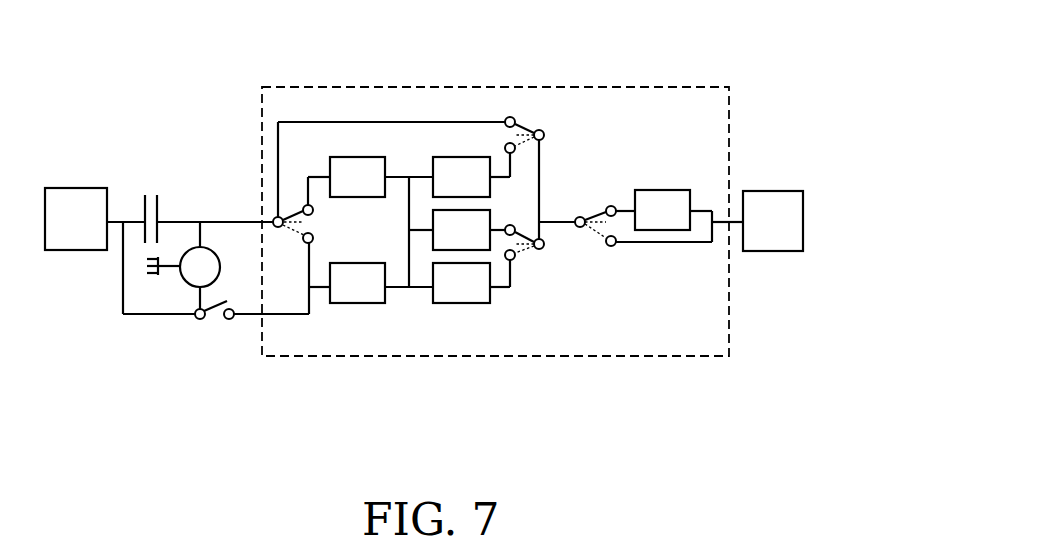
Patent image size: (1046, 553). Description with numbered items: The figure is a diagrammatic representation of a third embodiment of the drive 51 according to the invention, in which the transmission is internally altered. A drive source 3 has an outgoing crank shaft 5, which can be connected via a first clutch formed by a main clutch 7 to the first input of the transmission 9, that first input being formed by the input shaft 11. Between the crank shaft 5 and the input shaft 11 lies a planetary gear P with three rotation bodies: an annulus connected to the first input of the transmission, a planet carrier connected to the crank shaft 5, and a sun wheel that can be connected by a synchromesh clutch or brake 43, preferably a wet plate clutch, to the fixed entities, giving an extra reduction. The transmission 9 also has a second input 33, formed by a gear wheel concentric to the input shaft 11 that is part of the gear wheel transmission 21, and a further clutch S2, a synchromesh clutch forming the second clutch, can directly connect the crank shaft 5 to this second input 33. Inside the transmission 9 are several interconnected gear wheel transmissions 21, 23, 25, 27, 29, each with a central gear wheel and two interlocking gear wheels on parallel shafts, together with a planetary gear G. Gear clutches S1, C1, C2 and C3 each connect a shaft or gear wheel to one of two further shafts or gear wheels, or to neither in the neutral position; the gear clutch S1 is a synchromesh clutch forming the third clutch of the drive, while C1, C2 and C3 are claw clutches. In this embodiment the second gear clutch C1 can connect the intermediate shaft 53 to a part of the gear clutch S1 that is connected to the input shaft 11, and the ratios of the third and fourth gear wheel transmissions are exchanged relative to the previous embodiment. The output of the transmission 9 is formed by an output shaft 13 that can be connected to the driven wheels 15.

The drive 51 is at (166, 68).
The drive source 3 is at (76, 200).
The crank shaft 5 is at (117, 222).
The main clutch 7 is at (148, 192).
The input shaft 11 is at (232, 220).
The planetary gear P is at (207, 263).
The brake/clutch 43 is at (163, 274).
The further clutch S2 is at (213, 324).
The second input 33 is at (251, 314).
The transmission 9 is at (603, 83).
The gear clutch S1 is at (283, 203).
The gear wheel transmission 23 is at (355, 172).
The gear wheel transmission 25 is at (460, 177).
The gear wheel transmission 27 is at (452, 220).
The gear wheel transmission 21 is at (355, 290).
The gear wheel transmission 29 is at (458, 290).
The second gear clutch C1 is at (532, 132).
The gear clutch C2 is at (532, 243).
The gear clutch C3 is at (597, 226).
The intermediate shaft 53 is at (555, 222).
The planetary gear G is at (663, 197).
The output shaft 13 is at (735, 224).
The driven wheels 15 is at (768, 198).